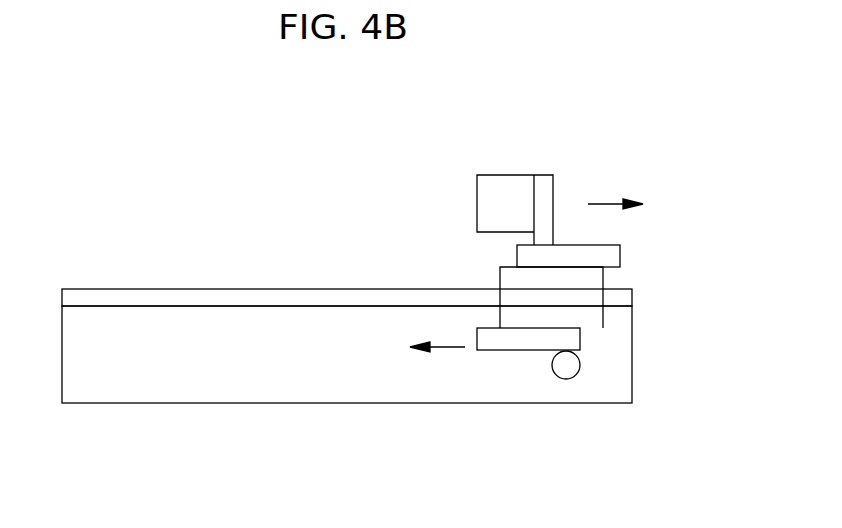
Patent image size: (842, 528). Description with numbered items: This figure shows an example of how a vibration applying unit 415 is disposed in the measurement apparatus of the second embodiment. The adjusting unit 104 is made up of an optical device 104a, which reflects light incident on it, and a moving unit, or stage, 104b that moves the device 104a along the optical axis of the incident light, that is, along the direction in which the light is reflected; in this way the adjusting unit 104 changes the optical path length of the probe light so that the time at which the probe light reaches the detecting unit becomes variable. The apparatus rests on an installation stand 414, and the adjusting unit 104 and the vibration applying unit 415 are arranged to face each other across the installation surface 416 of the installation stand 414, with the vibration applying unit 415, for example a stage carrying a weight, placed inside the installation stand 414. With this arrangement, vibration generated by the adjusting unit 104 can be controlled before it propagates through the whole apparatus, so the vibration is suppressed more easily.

The adjusting unit 104 is at (541, 195).
The optical device 104a is at (502, 180).
The moving unit (stage) 104b is at (577, 252).
The installation stand 414 is at (108, 403).
The vibration applying unit 415 is at (622, 341).
The installation surface 416 is at (92, 289).